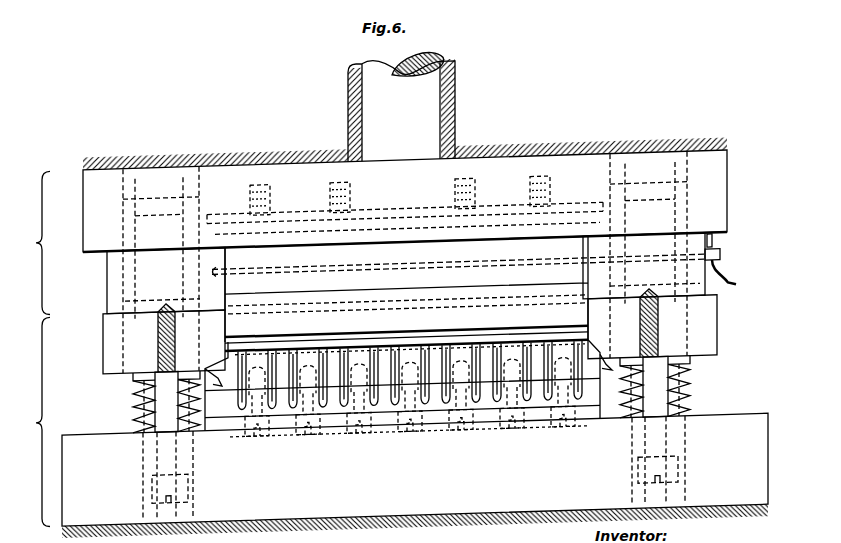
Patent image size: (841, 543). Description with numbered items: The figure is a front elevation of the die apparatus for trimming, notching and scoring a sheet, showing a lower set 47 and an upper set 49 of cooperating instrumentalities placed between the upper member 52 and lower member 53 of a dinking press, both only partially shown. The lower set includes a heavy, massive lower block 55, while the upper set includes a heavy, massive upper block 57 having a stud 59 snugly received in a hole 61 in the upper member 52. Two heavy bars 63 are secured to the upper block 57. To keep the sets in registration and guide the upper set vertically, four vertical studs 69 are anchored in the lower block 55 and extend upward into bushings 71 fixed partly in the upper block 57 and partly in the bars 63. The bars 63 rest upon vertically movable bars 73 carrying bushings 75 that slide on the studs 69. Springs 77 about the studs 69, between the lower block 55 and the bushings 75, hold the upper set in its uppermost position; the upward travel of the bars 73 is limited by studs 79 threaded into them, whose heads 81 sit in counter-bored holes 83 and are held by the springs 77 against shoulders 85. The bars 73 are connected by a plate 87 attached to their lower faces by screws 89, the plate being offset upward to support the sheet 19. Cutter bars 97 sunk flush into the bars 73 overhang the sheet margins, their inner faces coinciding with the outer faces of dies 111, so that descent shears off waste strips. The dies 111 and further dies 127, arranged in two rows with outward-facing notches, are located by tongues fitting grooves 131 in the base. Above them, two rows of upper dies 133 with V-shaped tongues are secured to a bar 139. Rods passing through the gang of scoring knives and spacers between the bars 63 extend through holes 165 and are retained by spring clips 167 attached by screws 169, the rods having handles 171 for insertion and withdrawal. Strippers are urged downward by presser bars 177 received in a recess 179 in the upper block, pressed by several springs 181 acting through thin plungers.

The strip stock 19 is at (560, 285).
The lower set of cooperating instrumentalities 47 is at (32, 422).
The upper set of cooperating instrumentalities 49 is at (32, 243).
The upper member of the press 52 is at (512, 153).
The lower member of the press 53 is at (381, 521).
The lower block 55 is at (768, 458).
The upper block 57 is at (727, 181).
The stud 59 is at (428, 112).
The hole 61 is at (447, 93).
The heavy bars 63 is at (115, 291).
The vertical studs 69 is at (138, 413).
The bushings 71 is at (195, 205).
The vertically movable bars 73 is at (103, 343).
The bushings 75 is at (133, 376).
The springs 77 is at (140, 398).
The studs 79 is at (170, 417).
The heads 81 is at (152, 486).
The counter-bored holes 83 is at (148, 507).
The shoulders 85 is at (150, 467).
The plate 87 is at (476, 365).
The screws 89 is at (218, 374).
The cutter bars 97 is at (230, 330).
The dies 111 is at (262, 340).
The dies 127 is at (322, 365).
The grooves 131 is at (392, 389).
The dies 133 is at (292, 325).
The bar 139 is at (340, 257).
The holes 165 is at (402, 269).
The spring clips 167 is at (720, 262).
The screws 169 is at (712, 248).
The handles 171 is at (732, 296).
The presser bars 177 is at (376, 219).
The recess 179 is at (417, 208).
The springs 181 is at (328, 190).